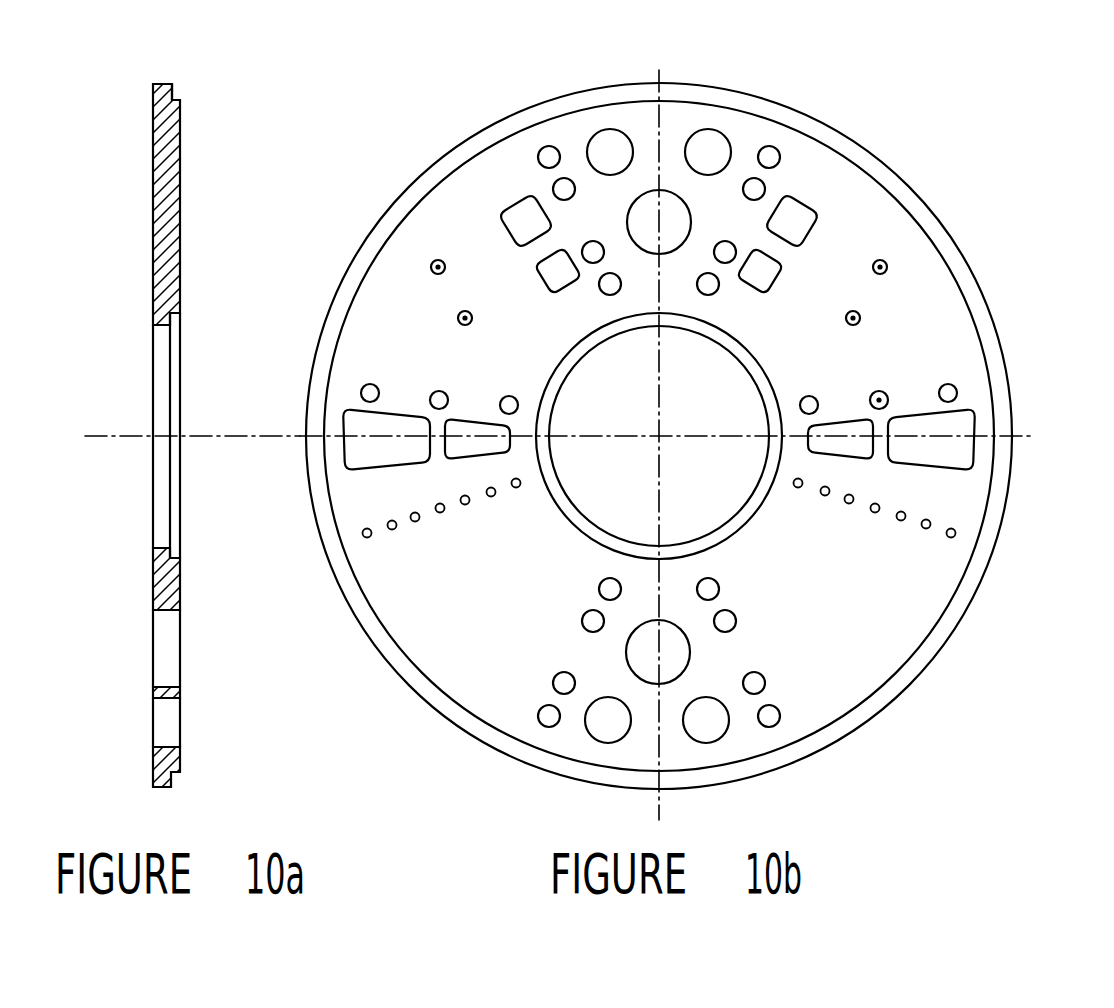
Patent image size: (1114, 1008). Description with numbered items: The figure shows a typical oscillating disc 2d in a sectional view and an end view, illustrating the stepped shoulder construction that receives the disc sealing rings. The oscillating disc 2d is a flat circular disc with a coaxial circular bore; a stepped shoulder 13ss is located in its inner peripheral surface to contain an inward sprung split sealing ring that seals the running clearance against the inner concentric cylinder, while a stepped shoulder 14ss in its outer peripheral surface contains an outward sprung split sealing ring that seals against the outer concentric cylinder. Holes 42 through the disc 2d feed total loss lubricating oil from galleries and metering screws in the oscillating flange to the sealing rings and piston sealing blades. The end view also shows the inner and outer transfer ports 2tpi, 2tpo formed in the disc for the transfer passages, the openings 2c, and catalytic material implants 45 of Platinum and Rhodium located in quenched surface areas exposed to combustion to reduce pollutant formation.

In FIG. 10a, the through holes 2c is at (162, 718).
In FIG. 10b, the through holes 2c is at (708, 150).
In FIG. 10a, the oscillating disc 2d is at (172, 228).
In FIG. 10b, the oscillating disc 2d is at (377, 332).
In FIG. 10b, the transfer ports 2tpi is at (553, 273).
In FIG. 10b, the transfer ports 2tpo is at (478, 446).
In FIG. 10a, the stepped shoulder 13ss is at (180, 318).
In FIG. 10b, the stepped shoulder 13ss is at (594, 333).
In FIG. 10a, the stepped shoulder 14ss is at (177, 101).
In FIG. 10b, the stepped shoulder 14ss is at (440, 698).
In FIG. 10a, the holes 42 is at (170, 317).
In FIG. 10b, the catalytic material implants 45 is at (518, 490).